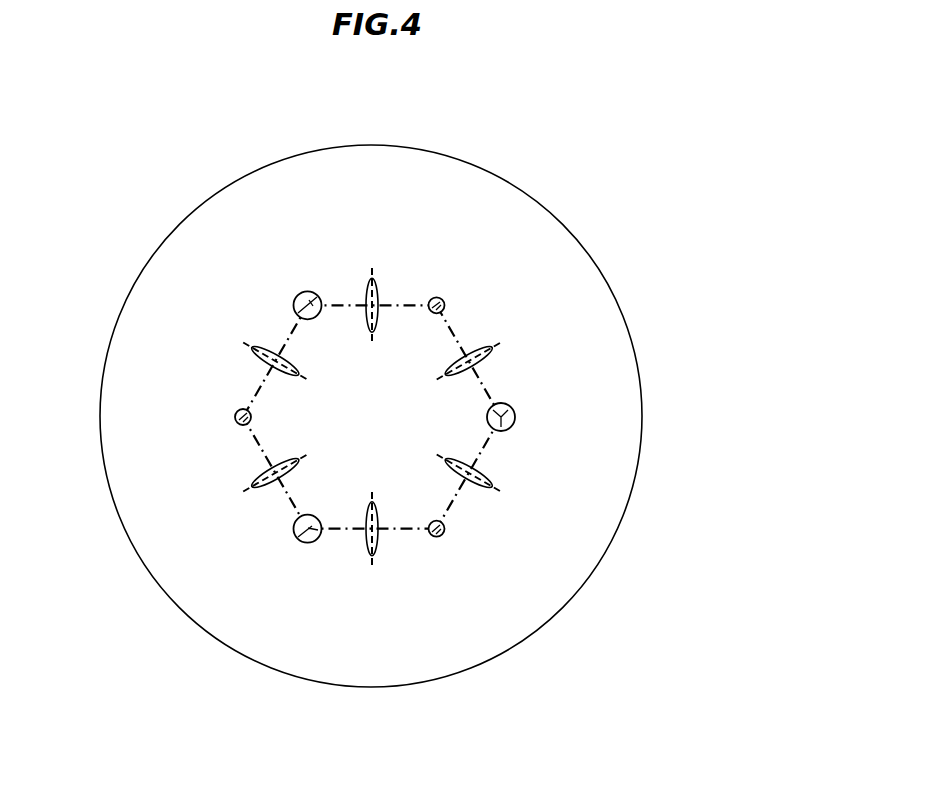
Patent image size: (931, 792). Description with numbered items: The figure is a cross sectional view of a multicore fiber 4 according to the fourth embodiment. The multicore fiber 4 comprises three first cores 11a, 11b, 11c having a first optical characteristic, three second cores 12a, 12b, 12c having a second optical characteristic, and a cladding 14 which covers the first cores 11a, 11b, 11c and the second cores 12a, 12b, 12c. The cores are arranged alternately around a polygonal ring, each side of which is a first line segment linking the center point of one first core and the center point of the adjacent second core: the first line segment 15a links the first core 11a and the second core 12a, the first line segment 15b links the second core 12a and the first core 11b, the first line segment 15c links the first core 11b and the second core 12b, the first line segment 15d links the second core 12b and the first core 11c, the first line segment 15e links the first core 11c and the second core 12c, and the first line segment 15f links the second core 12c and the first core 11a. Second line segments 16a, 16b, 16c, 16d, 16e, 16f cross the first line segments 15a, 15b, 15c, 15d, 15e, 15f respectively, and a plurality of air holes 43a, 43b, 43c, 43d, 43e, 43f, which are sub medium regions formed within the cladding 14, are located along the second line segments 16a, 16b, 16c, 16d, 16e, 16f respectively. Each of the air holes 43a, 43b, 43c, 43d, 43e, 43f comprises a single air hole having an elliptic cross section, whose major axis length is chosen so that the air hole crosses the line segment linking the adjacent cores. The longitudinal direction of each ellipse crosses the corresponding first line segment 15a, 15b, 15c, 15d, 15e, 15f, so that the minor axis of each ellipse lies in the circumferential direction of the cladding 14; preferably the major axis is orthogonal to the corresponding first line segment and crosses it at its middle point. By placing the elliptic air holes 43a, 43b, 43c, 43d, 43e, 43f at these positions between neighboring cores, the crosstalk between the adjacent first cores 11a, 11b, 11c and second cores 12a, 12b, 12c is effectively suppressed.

The multicore fiber 4 is at (568, 178).
The cladding 14 is at (482, 657).
The first core 11a is at (300, 295).
The first core 11b is at (515, 414).
The first core 11c is at (303, 542).
The second core 12a is at (444, 303).
The second core 12b is at (441, 537).
The second core 12c is at (236, 413).
The air hole 43a is at (372, 272).
The air hole 43b is at (496, 344).
The air hole 43c is at (493, 483).
The air hole 43d is at (378, 554).
The air hole 43e is at (257, 488).
The air hole 43f is at (253, 347).
The first line segment 15a is at (399, 310).
The first line segment 15b is at (488, 387).
The first line segment 15c is at (453, 498).
The first line segment 15d is at (340, 530).
The first line segment 15e is at (259, 448).
The first line segment 15f is at (293, 336).
The second line segment 16a is at (372, 350).
The second line segment 16b is at (438, 378).
The second line segment 16c is at (438, 457).
The second line segment 16d is at (373, 497).
The second line segment 16e is at (303, 457).
The second line segment 16f is at (300, 377).